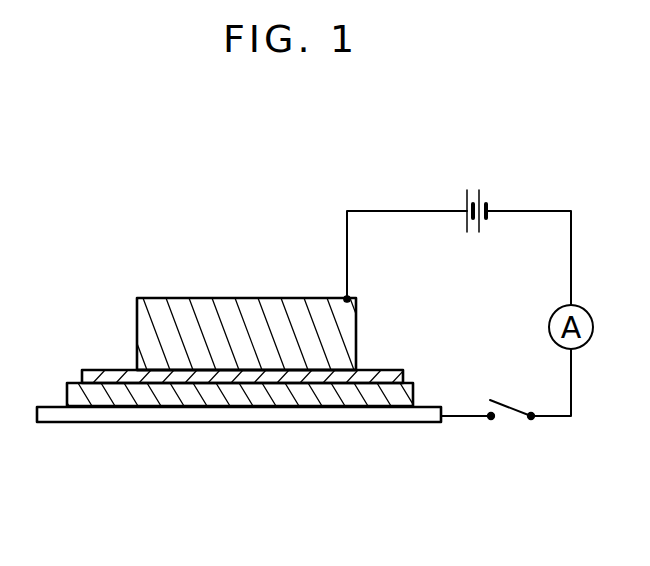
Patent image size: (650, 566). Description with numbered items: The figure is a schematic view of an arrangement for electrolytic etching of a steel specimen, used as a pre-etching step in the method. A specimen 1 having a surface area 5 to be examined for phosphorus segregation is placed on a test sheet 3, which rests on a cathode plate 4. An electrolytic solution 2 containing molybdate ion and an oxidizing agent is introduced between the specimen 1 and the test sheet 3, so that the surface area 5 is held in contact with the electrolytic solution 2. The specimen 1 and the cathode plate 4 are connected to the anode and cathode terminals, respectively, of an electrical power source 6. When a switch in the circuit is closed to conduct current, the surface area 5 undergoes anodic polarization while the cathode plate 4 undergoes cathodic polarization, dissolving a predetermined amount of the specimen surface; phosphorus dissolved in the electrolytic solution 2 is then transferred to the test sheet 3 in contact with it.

The specimen 1 is at (199, 314).
The electrolytic solution 2 is at (107, 377).
The test sheet 3 is at (82, 395).
The cathode plate 4 is at (225, 413).
The surface area 5 is at (299, 367).
The electrical power source 6 is at (480, 183).